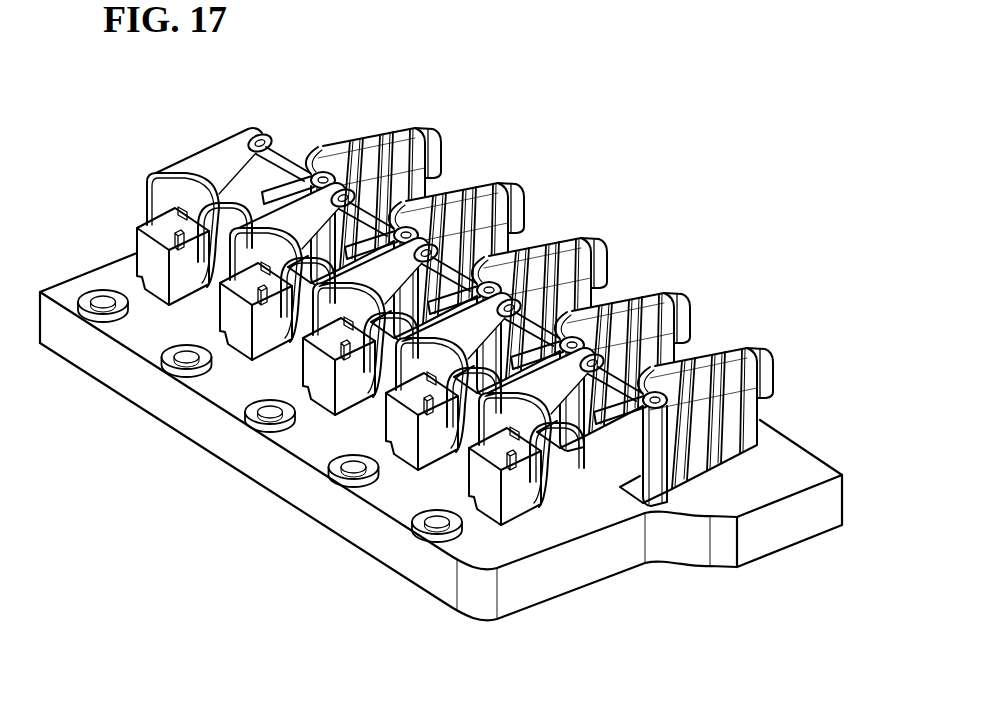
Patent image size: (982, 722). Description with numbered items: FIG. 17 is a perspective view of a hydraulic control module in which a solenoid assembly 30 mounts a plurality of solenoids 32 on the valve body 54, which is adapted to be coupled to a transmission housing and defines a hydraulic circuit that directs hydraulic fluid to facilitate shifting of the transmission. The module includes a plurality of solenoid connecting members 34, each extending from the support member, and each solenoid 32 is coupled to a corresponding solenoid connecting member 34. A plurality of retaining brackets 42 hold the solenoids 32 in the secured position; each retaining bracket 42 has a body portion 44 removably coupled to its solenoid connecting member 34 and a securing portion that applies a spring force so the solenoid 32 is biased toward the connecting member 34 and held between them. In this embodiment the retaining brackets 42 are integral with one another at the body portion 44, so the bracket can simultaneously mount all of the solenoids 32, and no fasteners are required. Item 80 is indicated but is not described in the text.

The solenoid assembly 30 is at (155, 147).
The solenoid 32 is at (305, 340).
The solenoid connecting member 34 is at (287, 160).
The retaining bracket 42 is at (237, 167).
The body portion 44 is at (277, 203).
The valve body 54 is at (807, 468).
The motor unit 80 is at (448, 28).